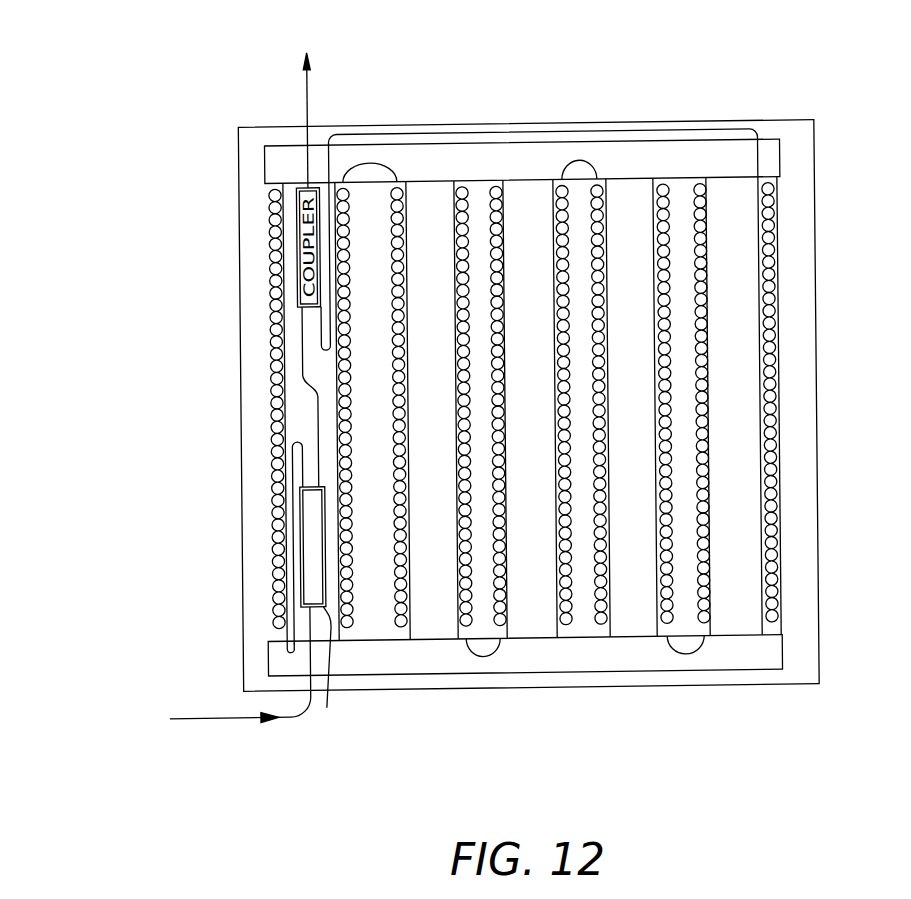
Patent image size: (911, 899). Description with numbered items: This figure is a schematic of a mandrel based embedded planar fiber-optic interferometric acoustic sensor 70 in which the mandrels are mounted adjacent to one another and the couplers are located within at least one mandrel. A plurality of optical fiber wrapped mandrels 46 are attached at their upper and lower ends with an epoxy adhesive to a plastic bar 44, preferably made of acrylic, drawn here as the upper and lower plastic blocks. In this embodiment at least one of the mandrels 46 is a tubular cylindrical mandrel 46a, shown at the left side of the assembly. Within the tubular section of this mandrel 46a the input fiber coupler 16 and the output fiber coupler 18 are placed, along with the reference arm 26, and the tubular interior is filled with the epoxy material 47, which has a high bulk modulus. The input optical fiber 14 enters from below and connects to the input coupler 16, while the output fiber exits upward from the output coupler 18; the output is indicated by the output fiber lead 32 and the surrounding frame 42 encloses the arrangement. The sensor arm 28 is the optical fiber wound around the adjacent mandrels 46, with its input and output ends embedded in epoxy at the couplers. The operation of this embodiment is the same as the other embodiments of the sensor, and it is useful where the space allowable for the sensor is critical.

The acoustic sensor 70 is at (421, 407).
The housing frame 42 is at (250, 406).
The plastic bar 44 is at (292, 162).
The optical fiber wrapped mandrel 46 is at (419, 236).
The tubular cylindrical mandrel 46a is at (477, 410).
The output fiber coupler 18 is at (273, 245).
The sensor arm 28 is at (425, 130).
The epoxy material 47 is at (291, 437).
The reference arm 26 is at (302, 380).
The output fiber 32 is at (309, 96).
The input fiber coupler 16 is at (319, 613).
The input optical fiber 14 is at (244, 716).